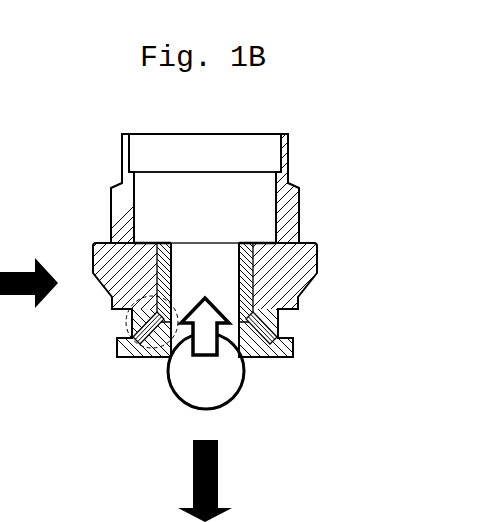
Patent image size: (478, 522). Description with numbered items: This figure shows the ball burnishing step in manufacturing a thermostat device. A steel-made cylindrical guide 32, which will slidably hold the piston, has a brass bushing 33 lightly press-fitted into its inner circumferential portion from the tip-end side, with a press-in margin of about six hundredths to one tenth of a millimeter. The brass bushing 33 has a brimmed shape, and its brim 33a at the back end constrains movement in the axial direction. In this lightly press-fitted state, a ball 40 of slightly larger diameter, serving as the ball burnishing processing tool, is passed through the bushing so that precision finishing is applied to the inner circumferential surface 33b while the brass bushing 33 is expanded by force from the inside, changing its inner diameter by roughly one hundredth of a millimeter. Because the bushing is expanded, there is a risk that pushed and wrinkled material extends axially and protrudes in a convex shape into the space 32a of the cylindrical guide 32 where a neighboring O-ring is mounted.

The cylindrical guide 32 is at (278, 224).
The space 32a is at (262, 207).
The brass bushing 33 is at (257, 294).
The brim 33a is at (263, 350).
The inner circumferential surface 33b is at (135, 321).
The ball 40 is at (182, 381).